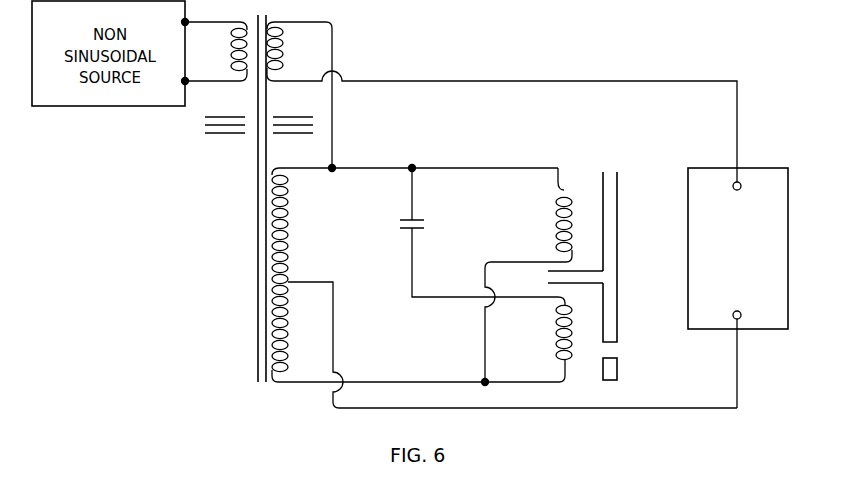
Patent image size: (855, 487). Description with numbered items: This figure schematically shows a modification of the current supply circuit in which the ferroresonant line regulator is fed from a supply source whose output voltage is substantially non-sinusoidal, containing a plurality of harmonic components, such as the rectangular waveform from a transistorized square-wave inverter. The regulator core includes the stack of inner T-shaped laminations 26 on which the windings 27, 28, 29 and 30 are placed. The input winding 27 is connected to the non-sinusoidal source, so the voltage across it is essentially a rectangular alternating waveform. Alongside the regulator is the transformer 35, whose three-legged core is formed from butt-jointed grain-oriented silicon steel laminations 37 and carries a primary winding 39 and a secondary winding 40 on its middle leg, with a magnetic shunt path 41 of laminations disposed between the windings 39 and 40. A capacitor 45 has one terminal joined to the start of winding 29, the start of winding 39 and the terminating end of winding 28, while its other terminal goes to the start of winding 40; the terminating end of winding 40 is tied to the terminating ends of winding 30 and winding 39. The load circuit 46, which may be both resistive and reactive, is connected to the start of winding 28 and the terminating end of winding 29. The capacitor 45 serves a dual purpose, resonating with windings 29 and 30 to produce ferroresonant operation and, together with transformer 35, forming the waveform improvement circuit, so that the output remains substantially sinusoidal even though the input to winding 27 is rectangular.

The inner T-shaped laminations 26 is at (258, 258).
The winding 27 is at (232, 45).
The winding 28 is at (283, 47).
The winding 29 is at (289, 241).
The winding 30 is at (288, 336).
The transformer 35 is at (619, 166).
The laminations 37 is at (619, 366).
The primary winding 39 is at (556, 210).
The secondary winding 40 is at (556, 340).
The magnetic shunt path 41 is at (583, 285).
The capacitor 45 is at (420, 222).
The load circuit 46 is at (738, 288).